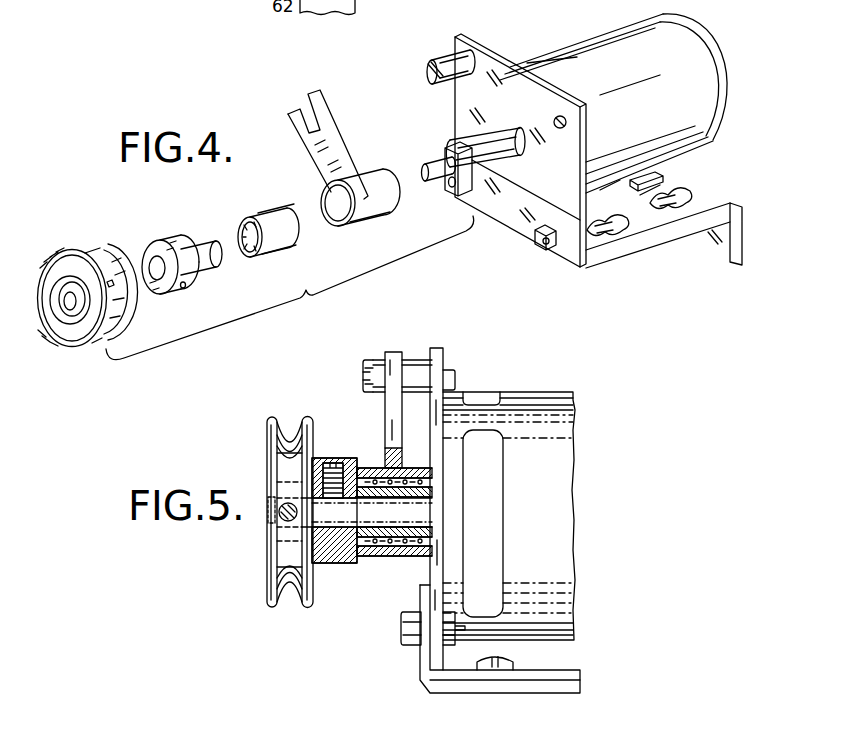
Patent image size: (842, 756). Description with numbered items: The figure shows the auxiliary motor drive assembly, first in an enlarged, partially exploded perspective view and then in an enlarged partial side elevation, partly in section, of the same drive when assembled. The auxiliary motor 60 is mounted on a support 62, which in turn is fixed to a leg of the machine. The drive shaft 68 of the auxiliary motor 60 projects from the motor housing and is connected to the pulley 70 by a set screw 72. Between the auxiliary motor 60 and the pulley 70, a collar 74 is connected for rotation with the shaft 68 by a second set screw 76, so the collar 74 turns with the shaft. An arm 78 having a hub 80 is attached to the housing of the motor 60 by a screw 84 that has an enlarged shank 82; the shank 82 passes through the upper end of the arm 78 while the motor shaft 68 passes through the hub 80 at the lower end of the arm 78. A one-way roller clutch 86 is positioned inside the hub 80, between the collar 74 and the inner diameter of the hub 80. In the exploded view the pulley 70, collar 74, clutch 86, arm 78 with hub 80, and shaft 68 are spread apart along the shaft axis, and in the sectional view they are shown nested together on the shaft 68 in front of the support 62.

In FIG. 4, the auxiliary motor 60 is at (596, 44).
In FIG. 5, the auxiliary motor 60 is at (533, 398).
In FIG. 4, the support 62 is at (653, 246).
In FIG. 5, the support 62 is at (510, 690).
In FIG. 4, the drive shaft 68 is at (432, 182).
In FIG. 5, the drive shaft 68 is at (268, 507).
In FIG. 4, the pulley 70 is at (64, 330).
In FIG. 5, the pulley 70 is at (270, 585).
In FIG. 4, the set screw 72 is at (110, 283).
In FIG. 5, the set screw 72 is at (290, 518).
In FIG. 4, the collar 74 is at (180, 242).
In FIG. 5, the collar 74 is at (340, 561).
In FIG. 4, the set screw 76 is at (185, 288).
In FIG. 5, the set screw 76 is at (329, 463).
In FIG. 4, the arm 78 is at (343, 145).
In FIG. 5, the arm 78 is at (389, 420).
In FIG. 4, the hub 80 is at (372, 212).
In FIG. 5, the hub 80 is at (413, 470).
In FIG. 4, the enlarged shank 82 is at (452, 60).
In FIG. 5, the enlarged shank 82 is at (418, 364).
In FIG. 4, the screw 84 is at (428, 71).
In FIG. 5, the screw 84 is at (367, 368).
In FIG. 4, the one-way roller clutch 86 is at (278, 243).
In FIG. 5, the one-way roller clutch 86 is at (397, 551).